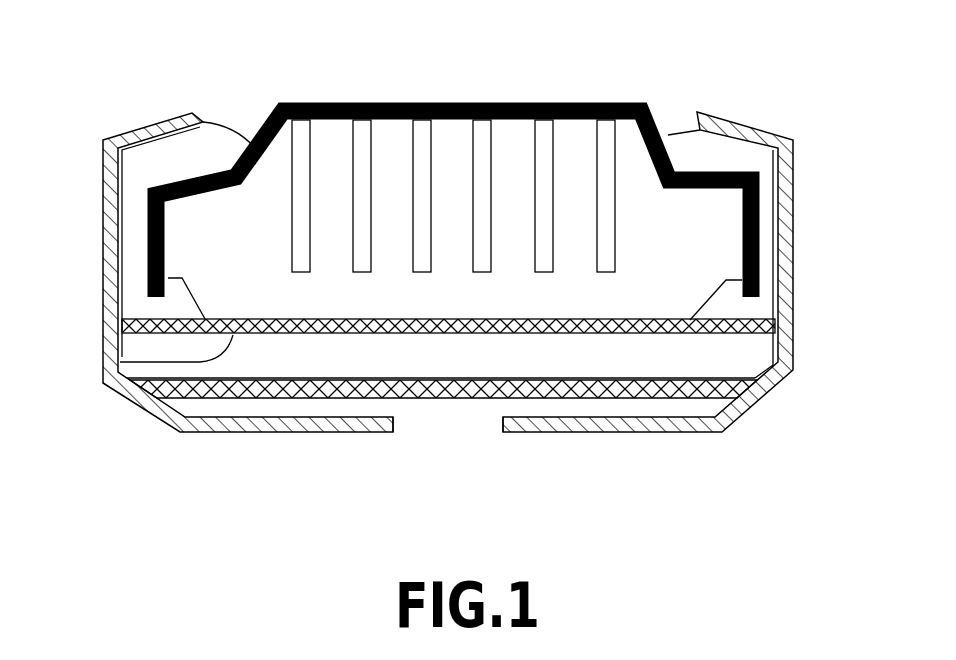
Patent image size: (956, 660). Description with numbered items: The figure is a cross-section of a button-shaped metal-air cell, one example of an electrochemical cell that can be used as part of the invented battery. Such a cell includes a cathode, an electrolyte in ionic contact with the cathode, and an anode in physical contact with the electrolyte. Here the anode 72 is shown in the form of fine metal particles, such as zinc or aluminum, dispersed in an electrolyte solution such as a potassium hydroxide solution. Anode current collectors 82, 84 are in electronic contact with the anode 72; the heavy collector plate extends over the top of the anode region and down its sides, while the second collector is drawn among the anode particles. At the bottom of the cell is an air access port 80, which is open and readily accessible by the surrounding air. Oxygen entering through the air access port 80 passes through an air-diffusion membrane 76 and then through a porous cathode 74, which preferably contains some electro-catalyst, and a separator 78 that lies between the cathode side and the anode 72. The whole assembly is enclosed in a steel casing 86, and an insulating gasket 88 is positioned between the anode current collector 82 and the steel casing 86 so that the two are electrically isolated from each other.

The anode 72 is at (387, 103).
The porous cathode 74 is at (747, 358).
The air-diffusion membrane 76 is at (627, 393).
The separator 78 is at (120, 362).
The air access port 80 is at (460, 430).
The anode current collector 82 is at (512, 107).
The anode current collector 84 is at (583, 157).
The steel casing 86 is at (152, 130).
The insulating gasket 88 is at (214, 147).